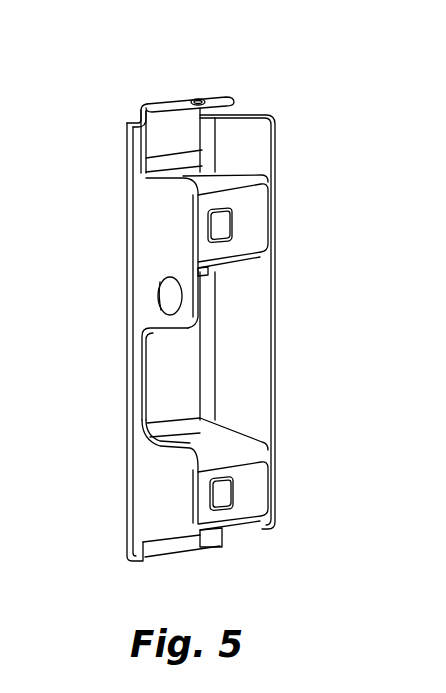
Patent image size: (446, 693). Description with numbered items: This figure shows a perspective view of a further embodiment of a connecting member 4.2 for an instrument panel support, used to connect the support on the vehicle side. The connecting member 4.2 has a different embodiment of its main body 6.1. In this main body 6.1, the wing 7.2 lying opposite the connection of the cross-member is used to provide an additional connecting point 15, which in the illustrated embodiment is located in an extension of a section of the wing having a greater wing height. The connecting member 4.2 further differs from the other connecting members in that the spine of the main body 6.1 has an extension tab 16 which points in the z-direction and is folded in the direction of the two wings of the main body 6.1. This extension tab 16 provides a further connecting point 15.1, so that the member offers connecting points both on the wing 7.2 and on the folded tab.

The connecting member 4.2 is at (194, 266).
The main body 6.1 is at (279, 195).
The wing 7.2 is at (143, 422).
The connecting point 15 is at (157, 303).
The connecting point 15.1 is at (197, 98).
The extension tab 16 is at (175, 98).